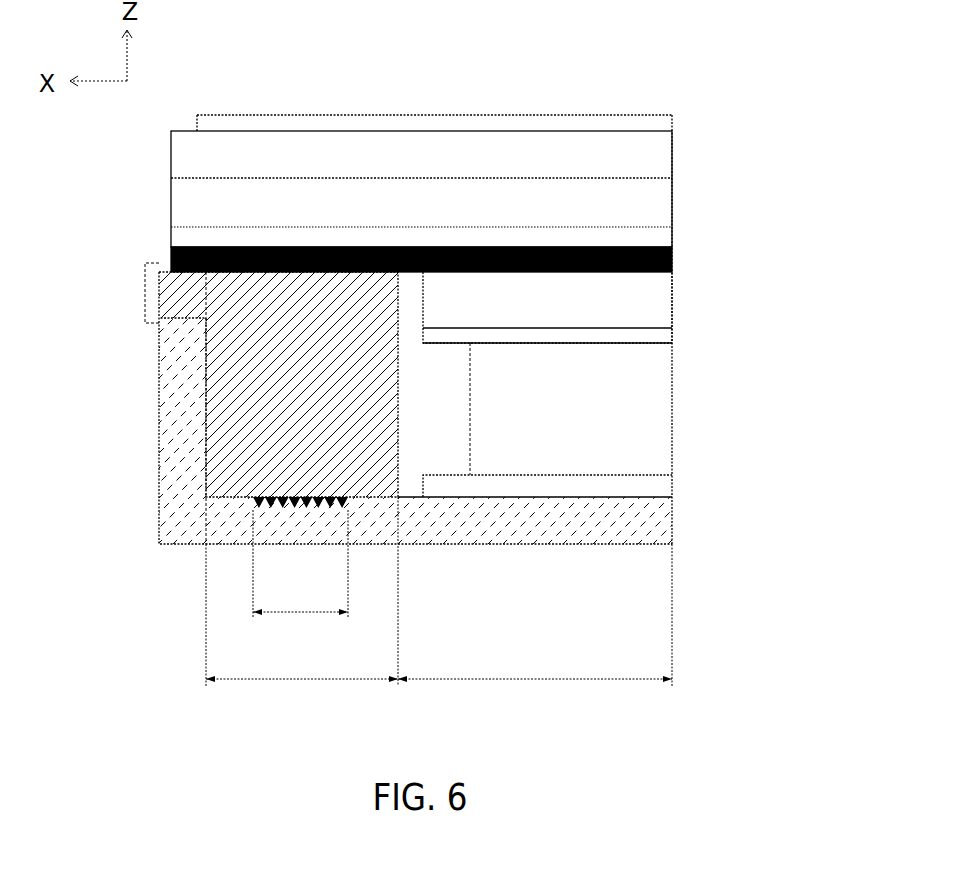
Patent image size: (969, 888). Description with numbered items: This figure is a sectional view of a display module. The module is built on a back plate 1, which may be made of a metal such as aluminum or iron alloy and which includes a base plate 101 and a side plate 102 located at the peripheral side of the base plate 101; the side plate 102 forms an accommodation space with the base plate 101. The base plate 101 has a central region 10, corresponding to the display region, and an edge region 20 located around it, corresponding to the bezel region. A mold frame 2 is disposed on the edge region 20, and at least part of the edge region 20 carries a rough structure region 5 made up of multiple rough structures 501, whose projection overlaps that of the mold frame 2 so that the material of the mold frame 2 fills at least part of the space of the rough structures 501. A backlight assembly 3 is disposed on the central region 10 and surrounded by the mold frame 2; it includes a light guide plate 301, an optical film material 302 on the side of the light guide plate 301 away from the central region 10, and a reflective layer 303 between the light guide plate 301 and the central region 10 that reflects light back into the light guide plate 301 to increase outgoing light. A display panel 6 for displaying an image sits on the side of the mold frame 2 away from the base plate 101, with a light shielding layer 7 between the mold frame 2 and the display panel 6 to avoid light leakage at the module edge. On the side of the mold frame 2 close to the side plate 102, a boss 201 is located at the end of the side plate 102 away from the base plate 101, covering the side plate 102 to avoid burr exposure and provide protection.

The back plate 1 is at (484, 411).
The base plate 101 is at (460, 520).
The side plate 102 is at (165, 418).
The mold frame 2 is at (222, 355).
The boss 201 is at (145, 272).
The backlight assembly 3 is at (588, 329).
The light guide plate 301 is at (673, 430).
The optical film material 302 is at (673, 311).
The reflective layer 303 is at (673, 488).
The rough structure region 5 is at (302, 614).
The rough structures 501 is at (277, 505).
The display panel 6 is at (673, 197).
The light shielding layer 7 is at (673, 260).
The central region 10 is at (528, 682).
The edge region 20 is at (288, 682).